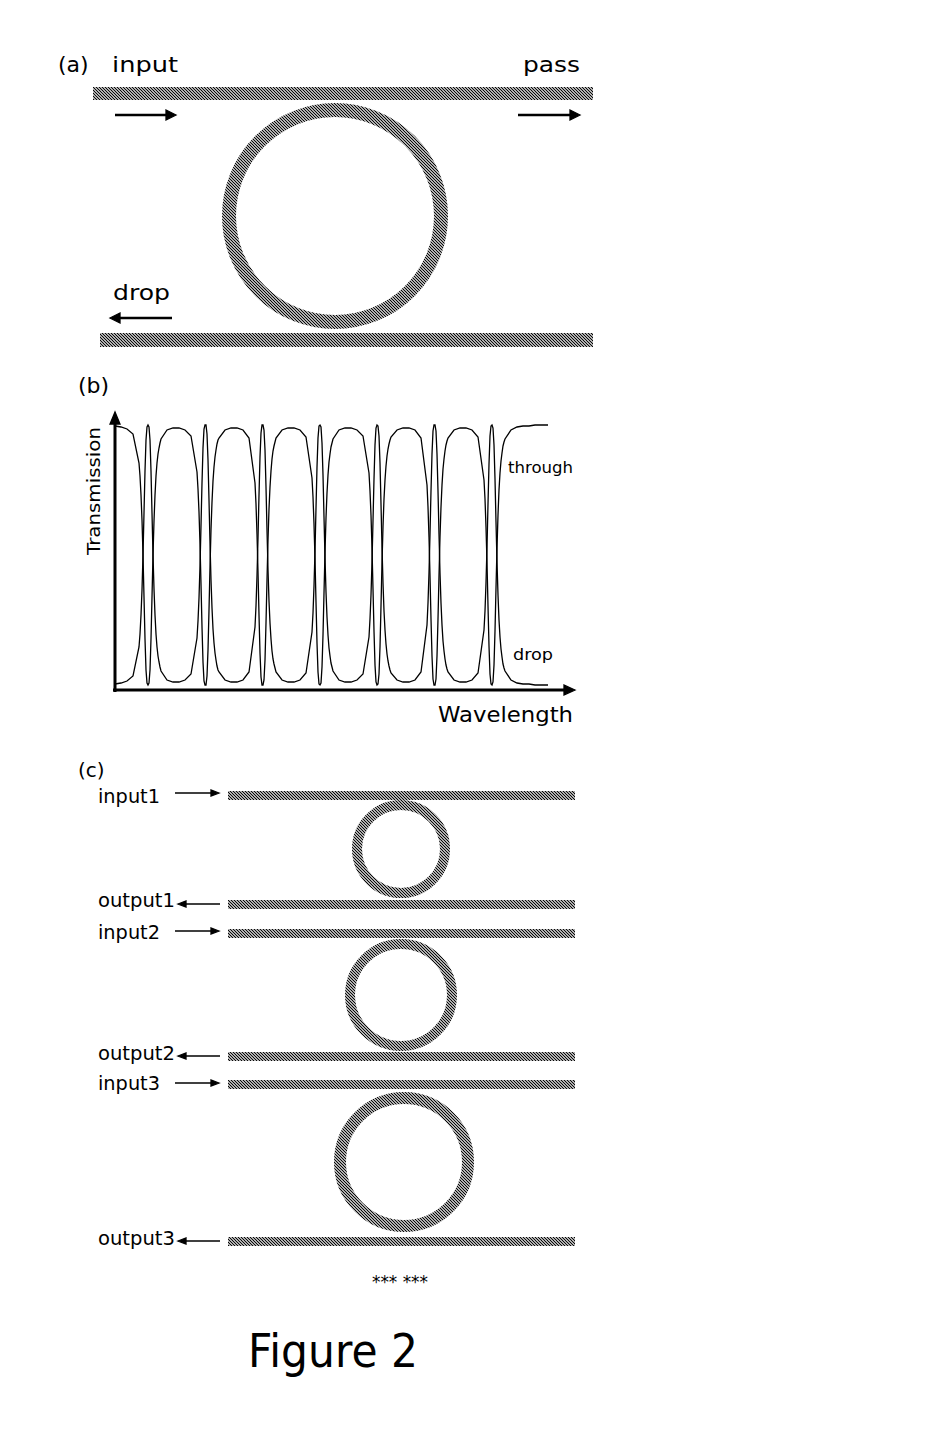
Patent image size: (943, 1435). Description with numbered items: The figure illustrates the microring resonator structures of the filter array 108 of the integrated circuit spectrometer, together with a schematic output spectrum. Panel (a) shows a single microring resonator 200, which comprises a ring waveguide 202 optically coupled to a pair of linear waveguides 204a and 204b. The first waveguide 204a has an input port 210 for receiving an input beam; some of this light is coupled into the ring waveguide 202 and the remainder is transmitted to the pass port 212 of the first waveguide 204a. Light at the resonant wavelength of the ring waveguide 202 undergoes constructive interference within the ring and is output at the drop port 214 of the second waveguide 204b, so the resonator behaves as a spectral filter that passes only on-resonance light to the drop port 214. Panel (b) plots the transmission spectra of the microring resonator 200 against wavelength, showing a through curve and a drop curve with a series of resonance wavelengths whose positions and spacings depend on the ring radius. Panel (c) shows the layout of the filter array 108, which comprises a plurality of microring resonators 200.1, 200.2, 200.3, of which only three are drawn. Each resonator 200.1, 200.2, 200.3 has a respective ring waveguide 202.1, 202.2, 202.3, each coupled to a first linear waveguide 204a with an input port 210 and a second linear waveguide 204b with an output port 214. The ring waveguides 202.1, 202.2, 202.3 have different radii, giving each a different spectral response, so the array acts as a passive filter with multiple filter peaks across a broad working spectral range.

The microring resonator 200 is at (612, 156).
The ring waveguide 202 is at (440, 247).
The first linear waveguide 204a is at (318, 87).
The second linear waveguide 204b is at (345, 340).
The input port 210 is at (105, 90).
The pass port 212 is at (597, 85).
The drop port 214 is at (105, 340).
The filter array 108 is at (628, 872).
The first microring resonator 200.1 is at (560, 831).
The second microring resonator 200.2 is at (557, 998).
The third microring resonator 200.3 is at (563, 1181).
The ring waveguide of first resonator 202.1 is at (352, 853).
The ring waveguide of second resonator 202.2 is at (349, 990).
The ring waveguide of third resonator 202.3 is at (335, 1168).